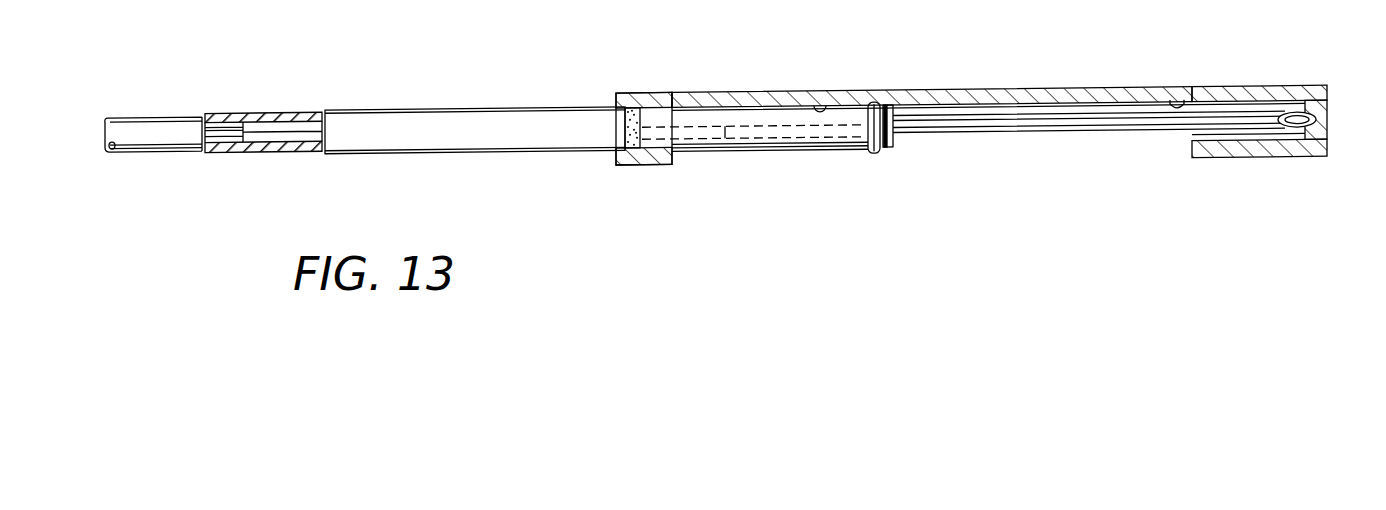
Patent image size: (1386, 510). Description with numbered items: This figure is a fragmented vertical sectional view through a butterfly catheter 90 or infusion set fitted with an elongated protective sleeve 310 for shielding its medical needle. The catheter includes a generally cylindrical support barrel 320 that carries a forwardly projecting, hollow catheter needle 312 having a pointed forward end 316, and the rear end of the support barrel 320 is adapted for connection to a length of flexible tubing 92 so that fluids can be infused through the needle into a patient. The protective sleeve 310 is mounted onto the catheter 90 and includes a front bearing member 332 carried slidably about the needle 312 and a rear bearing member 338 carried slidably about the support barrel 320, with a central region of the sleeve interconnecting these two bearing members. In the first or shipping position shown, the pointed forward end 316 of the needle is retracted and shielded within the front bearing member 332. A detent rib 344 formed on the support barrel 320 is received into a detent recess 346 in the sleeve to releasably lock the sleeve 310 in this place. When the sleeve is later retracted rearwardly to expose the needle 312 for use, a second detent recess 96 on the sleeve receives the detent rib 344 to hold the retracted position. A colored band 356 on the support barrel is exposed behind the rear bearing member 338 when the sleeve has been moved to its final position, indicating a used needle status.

The butterfly catheter 90 is at (843, 68).
The flexible tubing 92 is at (170, 128).
The second detent recess 96 is at (1185, 100).
The protective sleeve 310 is at (1087, 90).
The catheter needle 312 is at (1094, 125).
The pointed forward end 316 is at (1317, 113).
The support barrel 320 is at (552, 138).
The front bearing member 332 is at (1252, 87).
The rear bearing member 338 is at (651, 93).
The detent rib 344 is at (875, 157).
The detent recess 346 is at (893, 97).
The colored band 356 is at (628, 120).